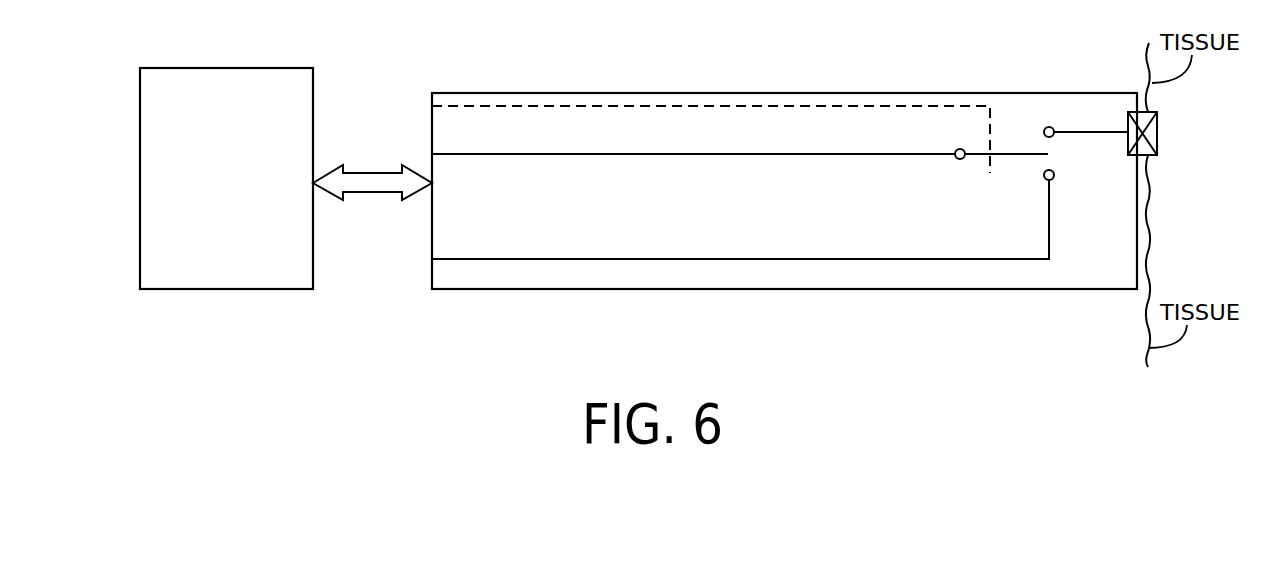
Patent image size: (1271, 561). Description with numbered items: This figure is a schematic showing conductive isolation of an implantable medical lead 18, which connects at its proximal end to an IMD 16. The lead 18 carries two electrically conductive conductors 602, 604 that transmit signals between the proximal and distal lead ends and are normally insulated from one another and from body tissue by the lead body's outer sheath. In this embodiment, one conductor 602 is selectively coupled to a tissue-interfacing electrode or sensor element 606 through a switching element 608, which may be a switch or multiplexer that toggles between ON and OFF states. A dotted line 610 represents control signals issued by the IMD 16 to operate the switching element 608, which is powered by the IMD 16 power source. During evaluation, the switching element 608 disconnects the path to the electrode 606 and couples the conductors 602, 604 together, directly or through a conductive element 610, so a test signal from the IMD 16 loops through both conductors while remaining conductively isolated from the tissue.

The IMD 16 is at (245, 290).
The lead 18 is at (537, 290).
The conductor 602 is at (642, 155).
The conductor 604 is at (642, 259).
The electrode or sensor element 606 is at (1158, 143).
The switching element 608 is at (977, 155).
The control signal / conductive element 610 is at (803, 106).